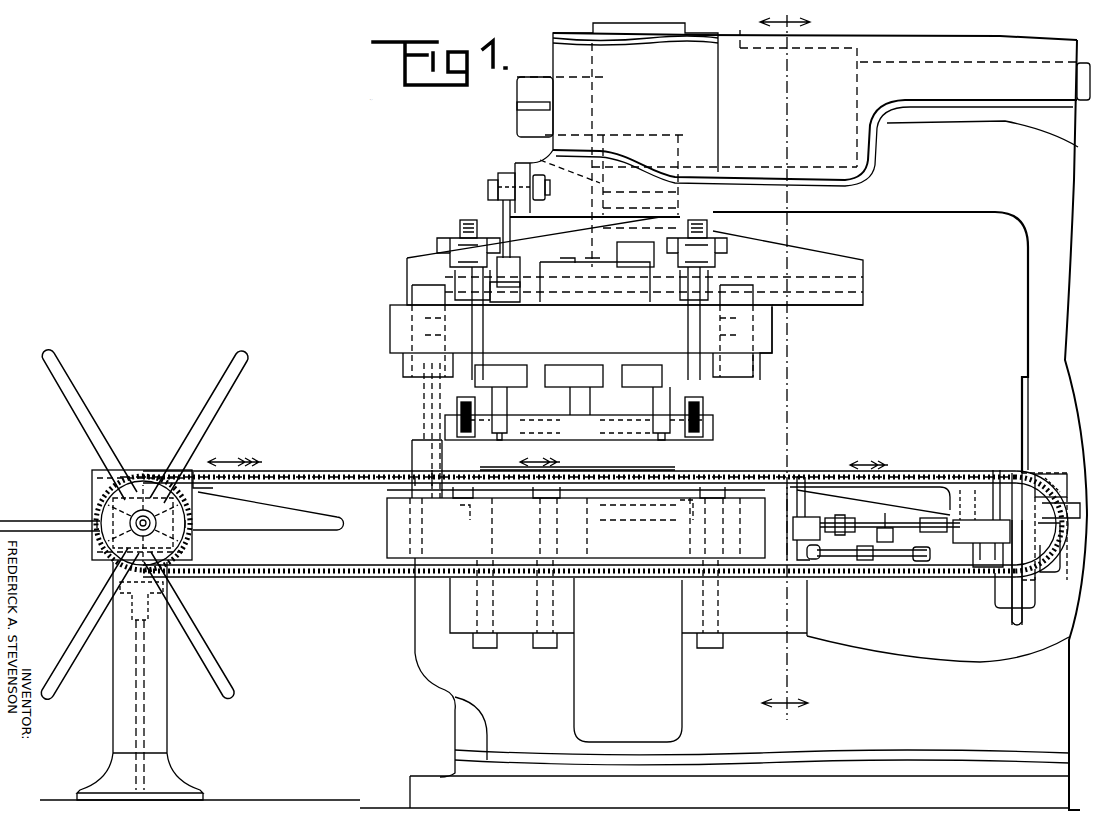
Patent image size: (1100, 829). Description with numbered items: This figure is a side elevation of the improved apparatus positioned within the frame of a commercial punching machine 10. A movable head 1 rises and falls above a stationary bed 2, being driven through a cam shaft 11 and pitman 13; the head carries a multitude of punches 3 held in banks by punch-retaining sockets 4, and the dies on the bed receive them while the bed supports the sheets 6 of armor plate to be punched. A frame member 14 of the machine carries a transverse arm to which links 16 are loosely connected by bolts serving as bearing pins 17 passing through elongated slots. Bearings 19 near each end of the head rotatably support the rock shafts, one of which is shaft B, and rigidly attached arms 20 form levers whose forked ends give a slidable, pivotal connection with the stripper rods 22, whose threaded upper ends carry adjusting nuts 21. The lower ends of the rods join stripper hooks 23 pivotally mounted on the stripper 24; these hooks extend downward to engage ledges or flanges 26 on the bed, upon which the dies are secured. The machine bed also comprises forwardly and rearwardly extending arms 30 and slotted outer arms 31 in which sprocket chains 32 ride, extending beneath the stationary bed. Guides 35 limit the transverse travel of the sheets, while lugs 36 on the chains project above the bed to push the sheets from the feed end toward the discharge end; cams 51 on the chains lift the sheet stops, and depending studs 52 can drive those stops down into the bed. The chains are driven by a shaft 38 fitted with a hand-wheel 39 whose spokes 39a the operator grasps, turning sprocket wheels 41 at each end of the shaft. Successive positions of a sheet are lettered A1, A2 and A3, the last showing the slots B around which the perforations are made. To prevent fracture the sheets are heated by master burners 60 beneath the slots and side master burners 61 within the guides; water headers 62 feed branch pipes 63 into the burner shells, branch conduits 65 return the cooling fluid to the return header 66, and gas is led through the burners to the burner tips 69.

The movable head 1 is at (581, 332).
The stationary bed 2 is at (576, 499).
The punches 3 is at (497, 412).
The punch-retaining sockets 4 is at (510, 383).
The sheets 6 is at (345, 470).
The punching machine 10 is at (723, 421).
The cam shaft 11 is at (520, 117).
The pitman 13 is at (545, 160).
The frame member 14 is at (563, 57).
The links 16 is at (505, 221).
The bearing pins 17 is at (488, 186).
The bearings 19 is at (500, 290).
The arms 20 is at (445, 240).
The nuts 21 is at (462, 228).
The stripper rods 22 is at (440, 275).
The stripper hooks 23 is at (455, 412).
The stripper 24 is at (540, 427).
The ledges or flanges 26 is at (466, 508).
The forwardly and rearwardly extending arms 30 is at (873, 502).
The outer arms 31 is at (1052, 470).
The sprocket chains 32 is at (283, 576).
The guides 35 is at (505, 470).
The lugs 36 is at (100, 565).
The shaft 38 is at (130, 520).
The hand-wheel 39 is at (165, 552).
The spokes 39a is at (80, 418).
The sprocket wheels 41 is at (143, 480).
The cams 51 is at (93, 545).
The depending studs 52 is at (430, 412).
The master burners 60 is at (965, 545).
The master burners 61 is at (803, 523).
The water conduits or headers 62 is at (918, 561).
The branch pipes 63 is at (820, 560).
The branch conduits 65 is at (826, 520).
The return header 66 is at (843, 518).
The burner tips 69 is at (797, 510).
The sheet A1 is at (970, 478).
The sheet A2 is at (606, 472).
The sheet A3 is at (287, 474).
The slots B is at (547, 265).